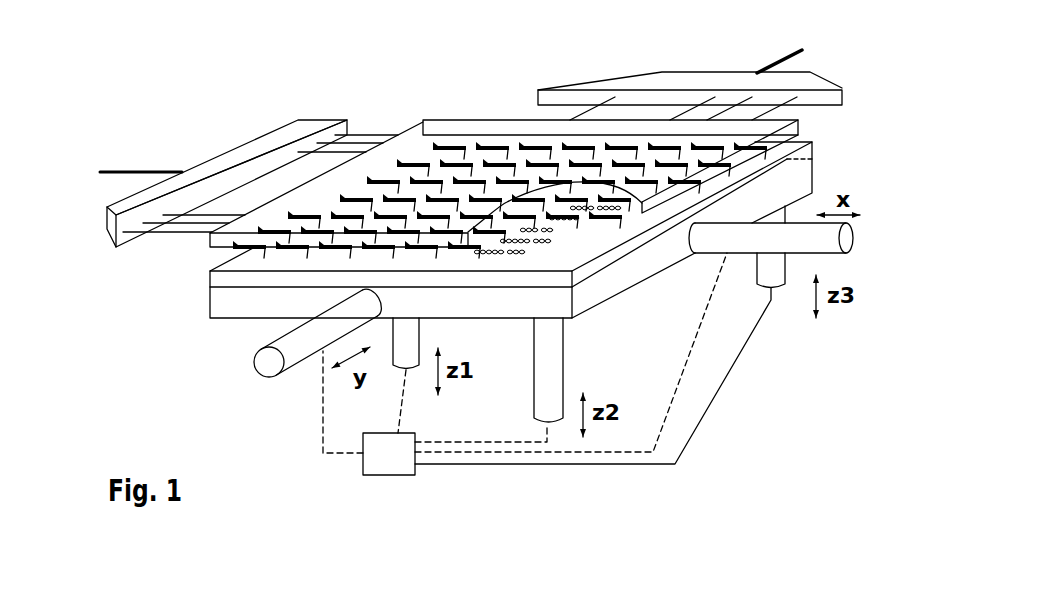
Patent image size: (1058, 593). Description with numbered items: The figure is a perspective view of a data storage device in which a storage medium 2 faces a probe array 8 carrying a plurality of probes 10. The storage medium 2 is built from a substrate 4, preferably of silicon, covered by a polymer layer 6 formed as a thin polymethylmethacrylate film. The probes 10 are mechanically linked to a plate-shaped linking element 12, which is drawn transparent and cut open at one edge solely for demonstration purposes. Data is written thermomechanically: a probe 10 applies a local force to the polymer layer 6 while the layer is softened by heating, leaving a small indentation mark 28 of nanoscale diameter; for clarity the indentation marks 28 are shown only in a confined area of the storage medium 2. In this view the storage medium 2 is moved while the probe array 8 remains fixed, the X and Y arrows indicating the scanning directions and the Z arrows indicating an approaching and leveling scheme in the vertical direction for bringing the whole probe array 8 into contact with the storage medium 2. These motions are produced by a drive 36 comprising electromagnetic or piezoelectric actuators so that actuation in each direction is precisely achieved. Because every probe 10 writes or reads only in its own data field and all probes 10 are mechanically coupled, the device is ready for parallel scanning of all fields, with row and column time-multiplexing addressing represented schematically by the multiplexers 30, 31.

The storage medium 2 is at (830, 142).
The substrate 4 is at (217, 320).
The polymer layer 6 is at (202, 278).
The probe array 8 is at (468, 130).
The probe 10 is at (507, 163).
The linking element 12 is at (803, 136).
The indentation marks 28 is at (558, 242).
The multiplexer 30 is at (658, 72).
The multiplexer 31 is at (263, 136).
The drive 36 is at (386, 475).